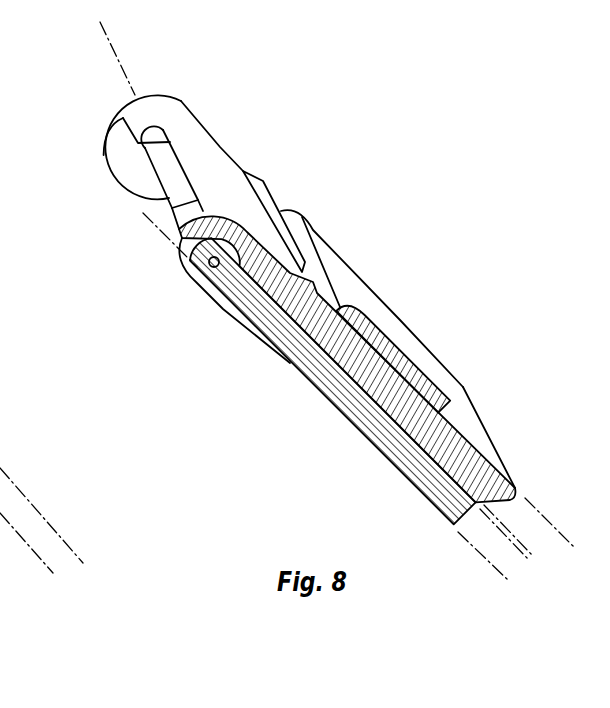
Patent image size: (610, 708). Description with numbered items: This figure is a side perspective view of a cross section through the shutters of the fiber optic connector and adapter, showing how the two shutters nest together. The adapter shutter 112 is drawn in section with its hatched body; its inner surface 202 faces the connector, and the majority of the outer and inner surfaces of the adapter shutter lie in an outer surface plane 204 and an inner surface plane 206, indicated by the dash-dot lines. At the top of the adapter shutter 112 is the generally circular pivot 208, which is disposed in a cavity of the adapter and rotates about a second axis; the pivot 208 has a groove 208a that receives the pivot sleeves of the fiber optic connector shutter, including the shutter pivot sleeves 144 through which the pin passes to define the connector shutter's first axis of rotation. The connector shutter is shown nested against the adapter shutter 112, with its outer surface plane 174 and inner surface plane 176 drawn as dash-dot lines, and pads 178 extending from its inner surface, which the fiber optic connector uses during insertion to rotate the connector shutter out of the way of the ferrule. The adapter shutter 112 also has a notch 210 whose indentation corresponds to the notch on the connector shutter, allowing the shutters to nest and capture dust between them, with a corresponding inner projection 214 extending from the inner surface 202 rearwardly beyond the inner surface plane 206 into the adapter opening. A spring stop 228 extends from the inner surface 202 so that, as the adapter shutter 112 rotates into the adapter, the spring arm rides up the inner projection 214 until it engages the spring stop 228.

The adapter shutter 112 is at (476, 403).
The shutter pivot sleeves 144 is at (192, 279).
The outer surface plane 174 is at (522, 548).
The inner surface plane 176 is at (143, 212).
The pads 178 is at (241, 332).
The inner surface 202 is at (423, 352).
The outer surface plane 204 is at (31, 546).
The inner surface plane 206 is at (67, 548).
The generally circular pivot 208 is at (156, 96).
The groove 208a is at (120, 163).
The notch 210 is at (318, 233).
The inner projection 214 is at (356, 273).
The spring stop 228 is at (267, 188).